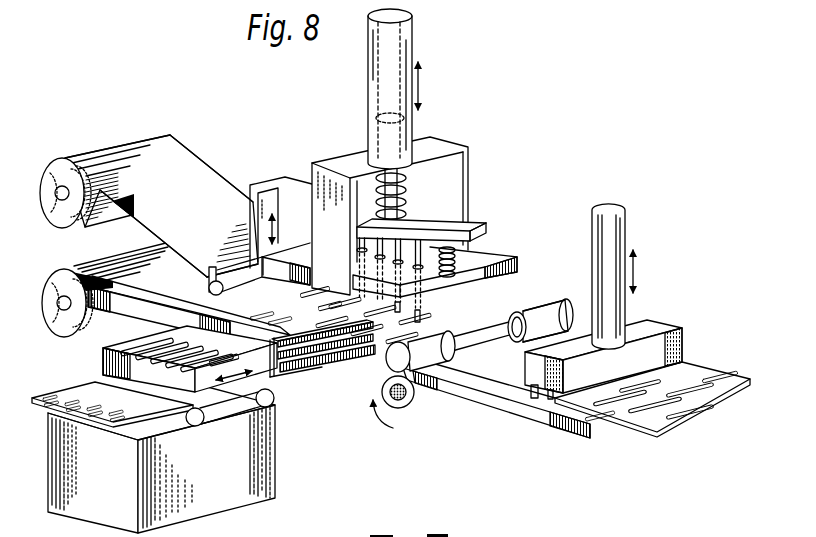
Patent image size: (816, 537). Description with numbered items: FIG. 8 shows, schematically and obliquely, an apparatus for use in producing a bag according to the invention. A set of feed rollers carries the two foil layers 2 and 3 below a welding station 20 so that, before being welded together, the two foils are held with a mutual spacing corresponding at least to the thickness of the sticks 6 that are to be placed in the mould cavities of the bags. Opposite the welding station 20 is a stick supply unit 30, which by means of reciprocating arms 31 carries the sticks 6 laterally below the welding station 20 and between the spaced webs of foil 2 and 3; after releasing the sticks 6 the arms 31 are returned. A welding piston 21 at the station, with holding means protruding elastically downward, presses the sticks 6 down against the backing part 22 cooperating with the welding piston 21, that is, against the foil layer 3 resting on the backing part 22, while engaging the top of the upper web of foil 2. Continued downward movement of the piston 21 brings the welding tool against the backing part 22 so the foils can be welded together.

The foil layer 2 is at (210, 178).
The foil layer 3 is at (73, 266).
The sticks 6 is at (315, 367).
The welding station 20 is at (476, 165).
The welding piston 21 is at (497, 253).
The backing part 22 is at (368, 372).
The stick supply unit 30 is at (98, 356).
The reciprocating arms 31 is at (283, 378).